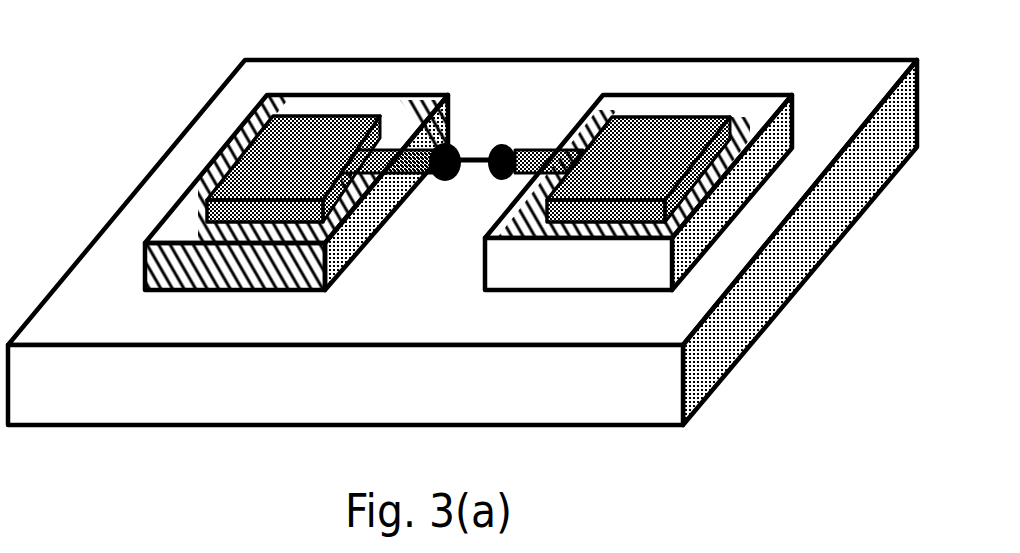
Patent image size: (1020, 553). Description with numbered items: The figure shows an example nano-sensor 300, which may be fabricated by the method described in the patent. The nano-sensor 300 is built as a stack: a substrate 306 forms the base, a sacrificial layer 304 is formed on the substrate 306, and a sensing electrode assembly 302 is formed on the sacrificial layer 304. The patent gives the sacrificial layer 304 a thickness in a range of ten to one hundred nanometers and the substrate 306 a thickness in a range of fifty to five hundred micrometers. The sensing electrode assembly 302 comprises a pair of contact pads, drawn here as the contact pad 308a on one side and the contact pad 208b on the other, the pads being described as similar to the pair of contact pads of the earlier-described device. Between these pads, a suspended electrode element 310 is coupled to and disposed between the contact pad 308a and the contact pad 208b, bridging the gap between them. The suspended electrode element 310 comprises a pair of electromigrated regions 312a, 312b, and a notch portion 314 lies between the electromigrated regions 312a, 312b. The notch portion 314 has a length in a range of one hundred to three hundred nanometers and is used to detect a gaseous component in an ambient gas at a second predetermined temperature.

The nano-sensor 300 is at (481, 51).
The sensing electrode assembly 302 is at (556, 125).
The sacrificial layer 304 is at (643, 252).
The substrate 306 is at (532, 407).
The contact pad 308a is at (325, 135).
The contact pad 208b is at (712, 157).
The suspended electrode element 310 is at (378, 167).
The electromigrated region 312a is at (433, 147).
The electromigrated region 312b is at (493, 157).
The notch portion 314 is at (474, 155).